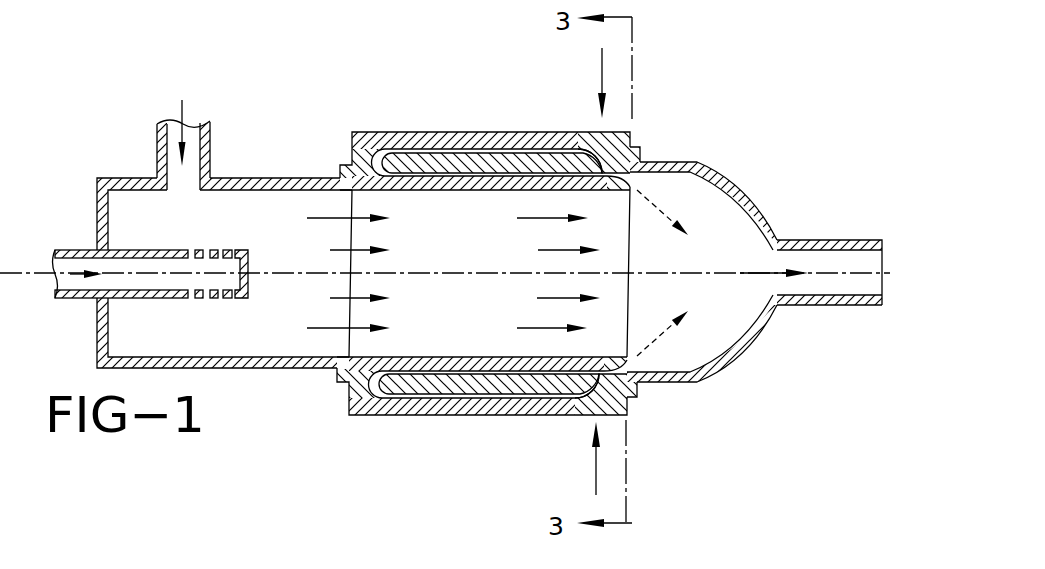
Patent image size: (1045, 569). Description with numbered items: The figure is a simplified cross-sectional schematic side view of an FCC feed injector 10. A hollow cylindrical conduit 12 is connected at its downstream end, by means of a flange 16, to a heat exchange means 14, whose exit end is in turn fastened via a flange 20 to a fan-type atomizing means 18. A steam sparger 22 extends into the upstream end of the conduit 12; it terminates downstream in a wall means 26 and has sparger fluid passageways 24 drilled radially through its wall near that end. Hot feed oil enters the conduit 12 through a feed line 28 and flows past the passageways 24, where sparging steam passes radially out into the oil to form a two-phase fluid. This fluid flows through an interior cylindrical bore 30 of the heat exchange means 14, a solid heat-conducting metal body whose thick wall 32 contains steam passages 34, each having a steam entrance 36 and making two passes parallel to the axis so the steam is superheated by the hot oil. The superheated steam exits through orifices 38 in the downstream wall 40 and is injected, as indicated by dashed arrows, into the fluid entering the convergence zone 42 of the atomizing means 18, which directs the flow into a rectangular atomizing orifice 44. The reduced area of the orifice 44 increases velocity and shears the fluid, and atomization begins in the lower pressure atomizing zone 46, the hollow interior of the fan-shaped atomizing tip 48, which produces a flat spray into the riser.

The FCC feed injector 10 is at (86, 101).
The conduit 12 is at (253, 368).
The heat exchange means 14 is at (360, 132).
The flange 16 is at (462, 419).
The atomizing means 18 is at (731, 176).
The flange 20 is at (641, 150).
The sparger 22 is at (73, 298).
The sparger fluid passageways 24 is at (230, 297).
The wall means 26 is at (249, 256).
The feed line 28 is at (211, 143).
The interior cylindrical bore 30 is at (483, 252).
The thick wall 32 is at (485, 416).
The steam passages 34 is at (422, 399).
The steam entrance 36 is at (597, 416).
The orifices 38 is at (680, 372).
The downstream wall 40 is at (628, 407).
The convergence zone 42 is at (735, 257).
The atomizing orifice 44 is at (753, 285).
The atomizing zone 46 is at (829, 265).
The atomizing tip 48 is at (820, 305).